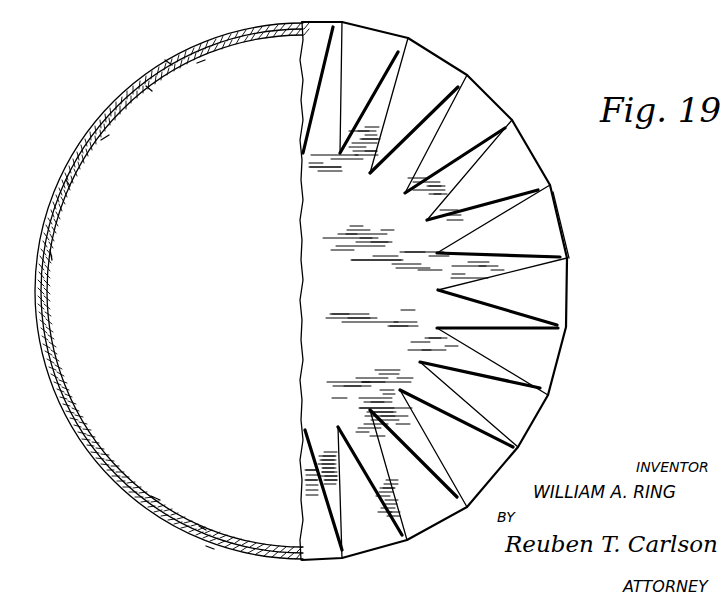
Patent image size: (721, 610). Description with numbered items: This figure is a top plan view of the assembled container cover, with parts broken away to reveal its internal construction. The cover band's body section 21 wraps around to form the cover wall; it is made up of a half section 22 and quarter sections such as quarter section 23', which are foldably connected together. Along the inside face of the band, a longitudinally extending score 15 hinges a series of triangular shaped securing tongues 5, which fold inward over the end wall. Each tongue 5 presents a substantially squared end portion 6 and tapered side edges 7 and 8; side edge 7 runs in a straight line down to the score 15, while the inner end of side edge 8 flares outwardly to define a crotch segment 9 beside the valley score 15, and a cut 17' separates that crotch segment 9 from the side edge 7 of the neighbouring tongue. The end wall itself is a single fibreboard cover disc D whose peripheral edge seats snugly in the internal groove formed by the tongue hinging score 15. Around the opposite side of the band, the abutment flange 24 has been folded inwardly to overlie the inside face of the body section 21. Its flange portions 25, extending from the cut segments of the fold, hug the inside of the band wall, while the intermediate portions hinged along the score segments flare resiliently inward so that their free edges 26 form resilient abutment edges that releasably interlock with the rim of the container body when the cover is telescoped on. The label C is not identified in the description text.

The securing tongue 5 is at (470, 117).
The squared end portion 6 is at (402, 195).
The side edge 7 is at (415, 165).
The side edge 8 is at (447, 172).
The crotch segment 9 is at (505, 127).
The longitudinal score 15 is at (440, 56).
The cut 17' is at (525, 228).
The body section 21 is at (102, 119).
The half section 22 is at (208, 545).
The quarter section 23' is at (137, 61).
The abutment flange 24 is at (60, 245).
The flange portion 25 is at (150, 88).
The free edge of intermediate flange portion 26 is at (203, 61).
The cutter periphery C is at (563, 210).
The cover disc D is at (320, 282).